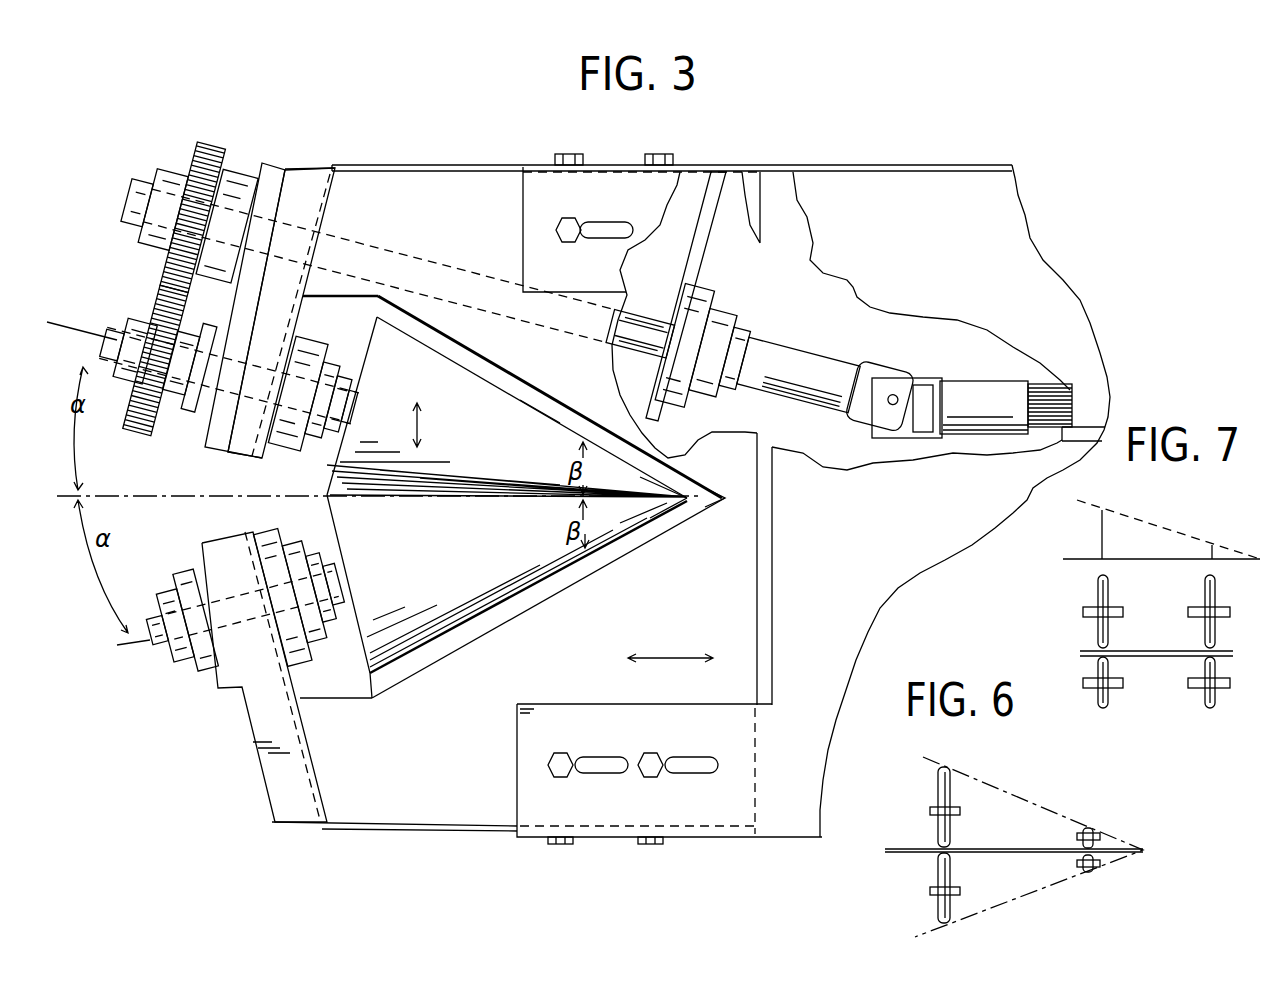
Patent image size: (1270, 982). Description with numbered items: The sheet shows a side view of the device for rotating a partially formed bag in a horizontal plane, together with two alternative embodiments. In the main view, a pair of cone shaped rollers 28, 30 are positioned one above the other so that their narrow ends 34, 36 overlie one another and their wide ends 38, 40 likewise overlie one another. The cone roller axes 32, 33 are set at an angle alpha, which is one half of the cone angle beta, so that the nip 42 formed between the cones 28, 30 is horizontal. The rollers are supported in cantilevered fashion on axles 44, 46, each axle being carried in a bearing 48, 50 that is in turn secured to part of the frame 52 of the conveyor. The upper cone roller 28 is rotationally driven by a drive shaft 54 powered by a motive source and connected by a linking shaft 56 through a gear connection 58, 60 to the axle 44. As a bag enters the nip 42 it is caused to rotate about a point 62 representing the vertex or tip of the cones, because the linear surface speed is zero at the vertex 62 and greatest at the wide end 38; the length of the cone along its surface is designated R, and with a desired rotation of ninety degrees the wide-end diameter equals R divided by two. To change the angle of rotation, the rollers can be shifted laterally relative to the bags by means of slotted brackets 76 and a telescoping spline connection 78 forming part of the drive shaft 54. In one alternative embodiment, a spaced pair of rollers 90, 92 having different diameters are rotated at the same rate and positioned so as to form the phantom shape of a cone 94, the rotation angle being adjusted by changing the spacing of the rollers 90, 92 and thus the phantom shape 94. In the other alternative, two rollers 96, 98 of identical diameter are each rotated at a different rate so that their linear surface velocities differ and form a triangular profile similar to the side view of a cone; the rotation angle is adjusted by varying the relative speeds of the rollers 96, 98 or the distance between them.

In FIG. 3, the cone shaped roller 28 is at (477, 378).
In FIG. 3, the cone shaped roller 30 is at (530, 577).
In FIG. 3, the cone roller axis 32 is at (88, 340).
In FIG. 3, the cone roller axis 33 is at (123, 644).
In FIG. 3, the narrow end 34 is at (690, 480).
In FIG. 3, the narrow end 36 is at (670, 510).
In FIG. 3, the wide end 38 is at (371, 325).
In FIG. 3, the wide end 40 is at (370, 660).
In FIG. 3, the nip 42 is at (330, 478).
In FIG. 3, the axle 44 is at (113, 325).
In FIG. 3, the axle 46 is at (163, 648).
In FIG. 3, the bearing 48 is at (228, 443).
In FIG. 3, the bearing 50 is at (202, 546).
In FIG. 3, the frame 52 is at (433, 166).
In FIG. 3, the drive shaft 54 is at (1010, 390).
In FIG. 3, the linking shaft 56 is at (431, 272).
In FIG. 3, the gear connection 58 is at (200, 150).
In FIG. 3, the gear connection 60 is at (160, 325).
In FIG. 3, the vertex 62 is at (712, 498).
In FIG. 3, the slotted bracket 76 is at (521, 188).
In FIG. 3, the telescoping spline connection 78 is at (1050, 396).
In FIG. 3, the cone surface length R is at (530, 395).
In FIG. 6, the roller 90 is at (933, 783).
In FIG. 6, the roller 92 is at (1080, 833).
In FIG. 6, the phantom shape of a cone 94 is at (1062, 790).
In FIG. 7, the roller 96 is at (1093, 590).
In FIG. 7, the roller 98 is at (1214, 592).